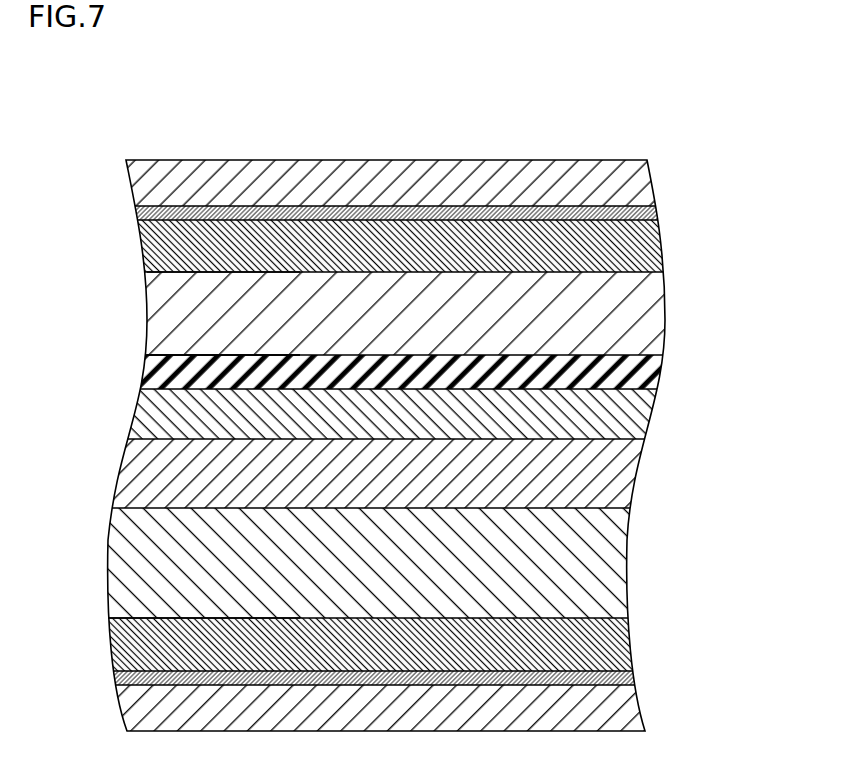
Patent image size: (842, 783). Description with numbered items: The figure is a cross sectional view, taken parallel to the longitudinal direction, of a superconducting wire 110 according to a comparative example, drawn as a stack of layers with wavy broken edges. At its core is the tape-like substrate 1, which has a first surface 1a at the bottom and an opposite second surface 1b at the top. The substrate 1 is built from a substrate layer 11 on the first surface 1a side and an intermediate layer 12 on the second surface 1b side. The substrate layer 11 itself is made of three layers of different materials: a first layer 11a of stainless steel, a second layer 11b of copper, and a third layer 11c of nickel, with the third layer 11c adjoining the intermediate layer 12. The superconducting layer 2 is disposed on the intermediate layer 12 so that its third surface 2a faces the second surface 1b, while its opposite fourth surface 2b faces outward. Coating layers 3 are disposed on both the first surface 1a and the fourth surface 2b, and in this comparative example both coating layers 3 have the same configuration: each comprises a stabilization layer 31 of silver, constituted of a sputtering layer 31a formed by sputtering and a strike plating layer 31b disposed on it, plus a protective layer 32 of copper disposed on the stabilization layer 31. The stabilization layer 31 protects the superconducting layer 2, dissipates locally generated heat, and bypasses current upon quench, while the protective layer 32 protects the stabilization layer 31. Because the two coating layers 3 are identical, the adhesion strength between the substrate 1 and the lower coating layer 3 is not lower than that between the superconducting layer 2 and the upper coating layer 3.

The superconducting wire 110 is at (652, 125).
The coating layer 3 is at (777, 168).
The protective layer 32 is at (651, 172).
The stabilization layer 31 is at (727, 202).
The sputtering layer 31a is at (648, 244).
The strike plating layer 31b is at (657, 211).
The superconducting layer 2 is at (651, 311).
The third surface 2a is at (146, 352).
The fourth surface 2b is at (147, 276).
The substrate 1 is at (777, 365).
The first surface 1a is at (152, 618).
The second surface 1b is at (144, 362).
The intermediate layer 12 is at (647, 376).
The substrate layer 11 is at (727, 408).
The first layer 11a is at (624, 566).
The second layer 11b is at (631, 473).
The third layer 11c is at (654, 412).